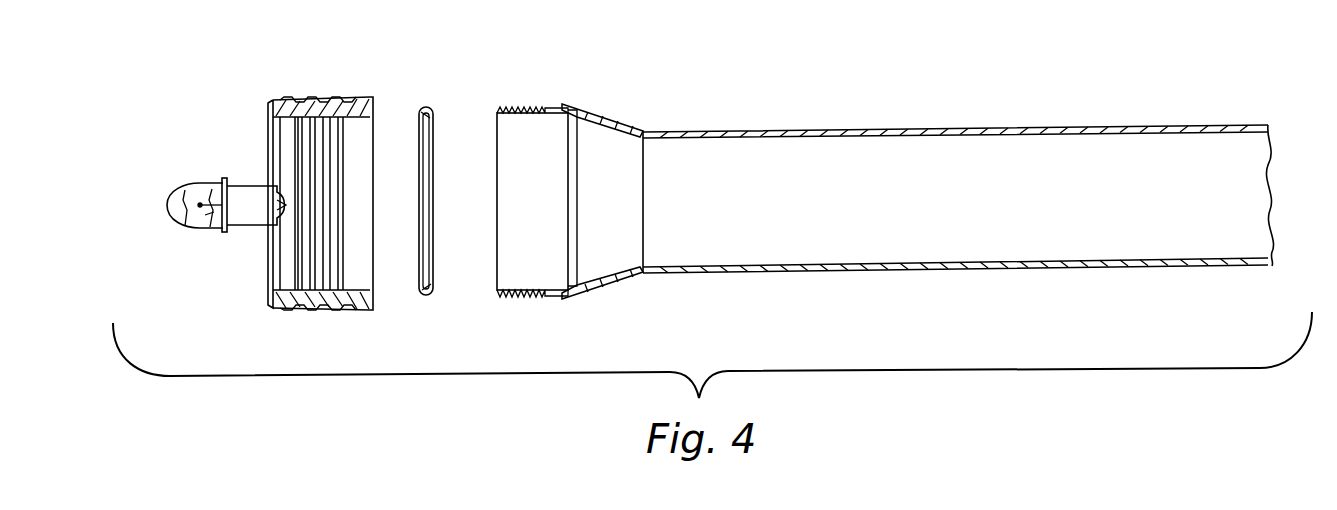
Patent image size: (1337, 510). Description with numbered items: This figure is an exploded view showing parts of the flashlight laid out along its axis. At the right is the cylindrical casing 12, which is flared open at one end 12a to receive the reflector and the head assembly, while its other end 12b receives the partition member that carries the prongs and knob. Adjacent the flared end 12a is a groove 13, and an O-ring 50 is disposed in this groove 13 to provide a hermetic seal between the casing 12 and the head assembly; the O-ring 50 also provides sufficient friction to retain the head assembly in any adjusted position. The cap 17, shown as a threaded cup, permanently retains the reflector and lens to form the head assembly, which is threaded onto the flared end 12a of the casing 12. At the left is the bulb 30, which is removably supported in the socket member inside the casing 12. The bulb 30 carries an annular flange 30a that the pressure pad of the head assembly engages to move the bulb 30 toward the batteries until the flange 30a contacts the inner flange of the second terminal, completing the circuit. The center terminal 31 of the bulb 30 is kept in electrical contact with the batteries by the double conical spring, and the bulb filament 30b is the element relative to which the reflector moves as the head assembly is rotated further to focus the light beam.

The cylindrical casing 12 is at (975, 128).
The flared end 12a is at (600, 122).
The other end 12b is at (1228, 125).
The groove 13 is at (556, 78).
The cap 17 is at (333, 68).
The bulb 30 is at (187, 183).
The annular flange 30a is at (224, 178).
The bulb filament 30b is at (195, 228).
The center terminal 31 is at (286, 205).
The O-ring 50 is at (424, 107).